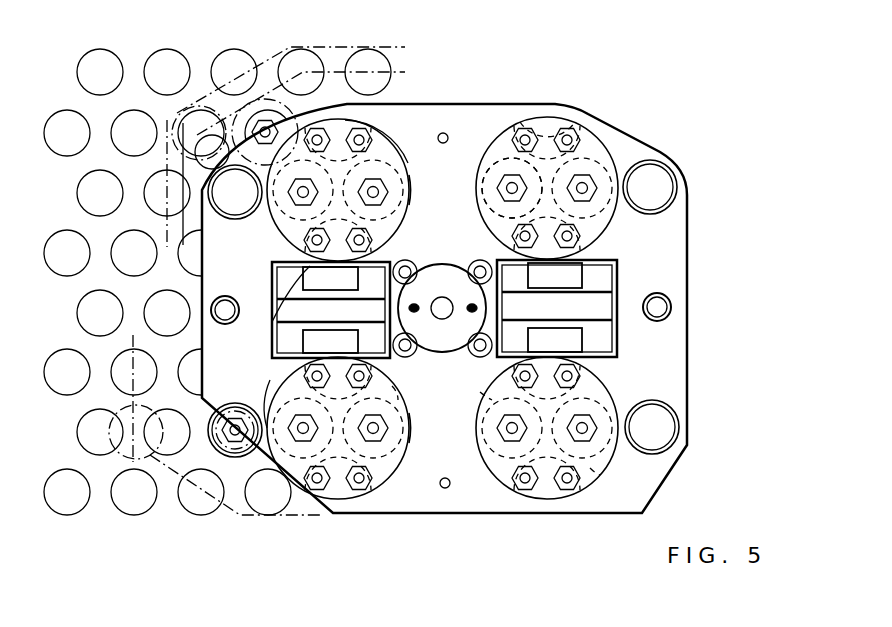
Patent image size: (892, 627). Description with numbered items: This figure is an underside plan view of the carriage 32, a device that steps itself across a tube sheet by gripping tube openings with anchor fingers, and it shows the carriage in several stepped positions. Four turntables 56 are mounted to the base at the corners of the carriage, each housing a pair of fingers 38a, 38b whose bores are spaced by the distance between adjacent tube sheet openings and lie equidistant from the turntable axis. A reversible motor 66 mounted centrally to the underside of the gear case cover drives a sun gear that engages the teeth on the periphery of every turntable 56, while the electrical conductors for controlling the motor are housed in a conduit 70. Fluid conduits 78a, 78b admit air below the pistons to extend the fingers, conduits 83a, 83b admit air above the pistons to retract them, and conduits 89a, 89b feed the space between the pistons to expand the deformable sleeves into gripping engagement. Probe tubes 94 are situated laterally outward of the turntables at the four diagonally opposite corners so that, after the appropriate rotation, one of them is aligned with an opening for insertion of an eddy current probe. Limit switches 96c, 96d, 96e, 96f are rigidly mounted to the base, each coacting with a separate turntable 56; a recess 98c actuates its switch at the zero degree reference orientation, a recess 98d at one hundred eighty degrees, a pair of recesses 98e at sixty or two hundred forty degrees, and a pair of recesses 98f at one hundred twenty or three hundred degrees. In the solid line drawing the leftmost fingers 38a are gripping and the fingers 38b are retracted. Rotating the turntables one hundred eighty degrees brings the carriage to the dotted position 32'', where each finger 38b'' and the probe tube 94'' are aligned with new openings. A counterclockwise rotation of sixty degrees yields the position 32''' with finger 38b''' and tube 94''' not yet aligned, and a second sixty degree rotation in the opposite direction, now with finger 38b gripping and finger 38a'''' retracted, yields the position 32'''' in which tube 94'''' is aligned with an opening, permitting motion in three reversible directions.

The carriage 32 is at (495, 308).
The carriage in stepped position (after 180° turntable rotation) 32'' is at (235, 502).
The carriage in stepped position (after single 60° rotation) 32''' is at (325, 94).
The carriage in stepped position (after second 60° rotation) 32'''' is at (318, 68).
The finger 38a is at (309, 331).
The finger (stepped position) 38a'''' is at (221, 93).
The finger 38b is at (435, 328).
The finger (stepped position) 38b'' is at (240, 392).
The finger (stepped position) 38b''' is at (394, 133).
The turntable 56 is at (605, 145).
The reversible motor 66 is at (440, 262).
The conduit 70 is at (441, 298).
The fluid conduit means 78a is at (380, 177).
The fluid conduit means 78b is at (590, 185).
The fluid conduit 83a is at (530, 235).
The fluid conduit 83b is at (572, 236).
The fluid conduit 89a is at (525, 138).
The fluid conduit 89b is at (570, 135).
The probe tube 94 is at (205, 311).
The probe tube (stepped position) 94'' is at (122, 401).
The probe tube (stepped position) 94''' is at (163, 153).
The probe tube (stepped position) 94'''' is at (160, 123).
The limit switch 96c is at (272, 322).
The limit switch 96d is at (616, 275).
The limit switch 96e is at (304, 340).
The limit switch 96f is at (616, 333).
The recess 98c is at (306, 278).
The recess 98d is at (565, 117).
The recesses 98e is at (395, 398).
The recesses 98f is at (488, 392).